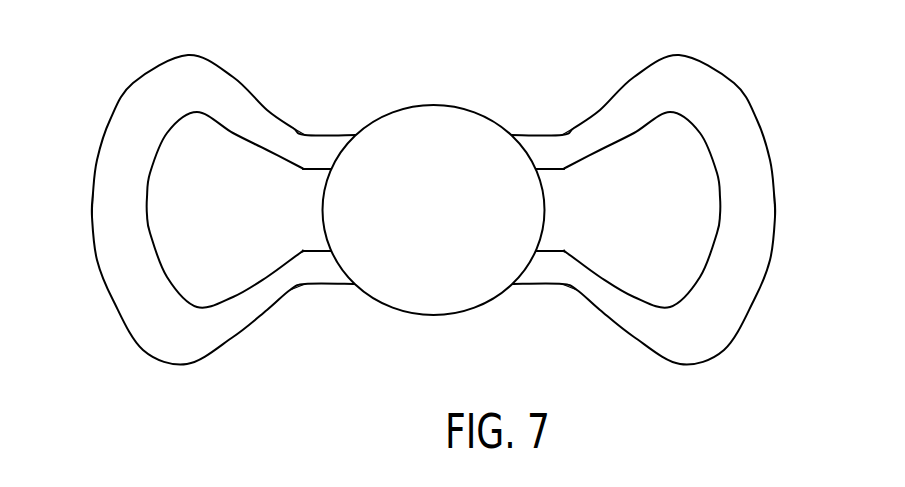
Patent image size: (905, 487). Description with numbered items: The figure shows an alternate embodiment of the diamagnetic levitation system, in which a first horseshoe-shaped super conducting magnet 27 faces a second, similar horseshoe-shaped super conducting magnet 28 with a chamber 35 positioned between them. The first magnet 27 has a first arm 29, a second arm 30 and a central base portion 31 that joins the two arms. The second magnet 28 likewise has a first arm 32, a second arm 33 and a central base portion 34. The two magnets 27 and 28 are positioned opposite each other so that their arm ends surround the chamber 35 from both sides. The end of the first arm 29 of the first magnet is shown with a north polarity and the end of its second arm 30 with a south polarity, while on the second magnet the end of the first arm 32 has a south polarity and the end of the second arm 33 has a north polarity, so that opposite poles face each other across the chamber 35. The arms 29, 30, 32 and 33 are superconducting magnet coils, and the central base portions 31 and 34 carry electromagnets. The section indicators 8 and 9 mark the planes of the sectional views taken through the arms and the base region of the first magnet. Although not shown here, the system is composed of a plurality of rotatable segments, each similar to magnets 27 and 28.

The first horseshoe-shaped super conducting magnet 27 is at (108, 51).
The second horseshoe-shaped super conducting magnet 28 is at (759, 48).
The first arm 29 is at (262, 120).
The second arm 30 is at (273, 282).
The central base portion 31 is at (108, 197).
The first arm 32 is at (553, 153).
The second arm 33 is at (553, 272).
The central base portion 34 is at (757, 235).
The chamber 35 is at (447, 217).
The section line for FIG. 8 is at (305, 96).
The section line for FIG. 9 is at (59, 227).